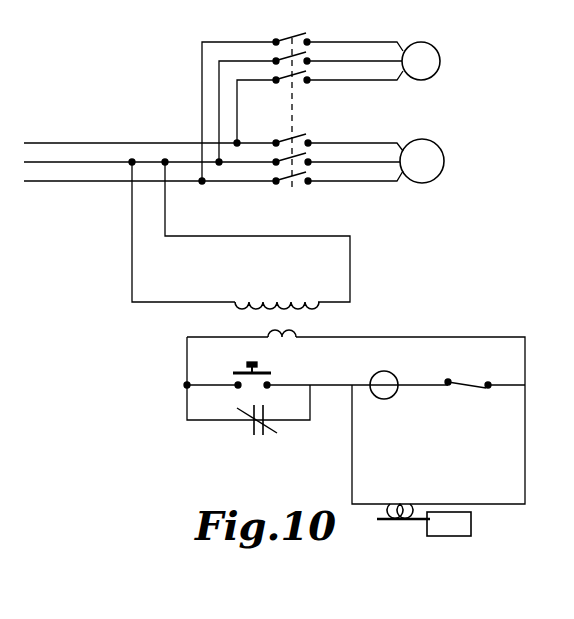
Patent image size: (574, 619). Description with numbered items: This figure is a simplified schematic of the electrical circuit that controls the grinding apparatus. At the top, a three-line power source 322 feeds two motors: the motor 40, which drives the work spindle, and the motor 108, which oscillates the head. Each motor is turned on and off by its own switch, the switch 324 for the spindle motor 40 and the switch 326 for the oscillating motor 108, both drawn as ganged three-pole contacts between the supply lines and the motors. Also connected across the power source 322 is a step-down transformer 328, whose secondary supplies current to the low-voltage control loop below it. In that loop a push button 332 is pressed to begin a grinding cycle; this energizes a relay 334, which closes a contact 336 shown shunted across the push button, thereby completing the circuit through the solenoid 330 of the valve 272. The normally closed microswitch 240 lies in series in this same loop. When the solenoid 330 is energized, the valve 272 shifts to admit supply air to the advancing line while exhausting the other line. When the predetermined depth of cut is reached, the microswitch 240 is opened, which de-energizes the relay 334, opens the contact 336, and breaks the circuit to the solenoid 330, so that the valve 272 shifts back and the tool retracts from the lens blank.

The power source 322 is at (55, 144).
The switch 326 is at (284, 30).
The motor 108 is at (440, 61).
The switch 324 is at (295, 195).
The motor 40 is at (444, 161).
The step-down transformer 328 is at (300, 322).
The push button 332 is at (248, 366).
The contact 336 is at (258, 437).
The relay 334 is at (386, 399).
The microswitch 240 is at (470, 388).
The solenoid 330 is at (398, 528).
The valve 272 is at (455, 528).